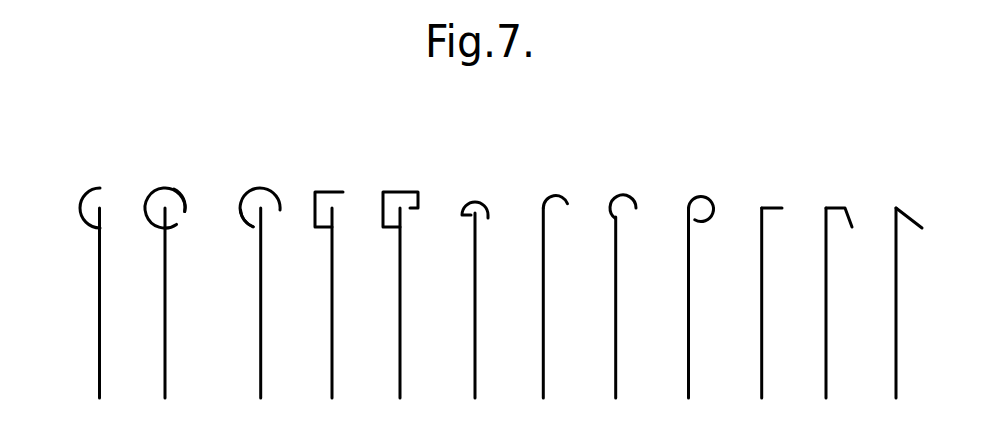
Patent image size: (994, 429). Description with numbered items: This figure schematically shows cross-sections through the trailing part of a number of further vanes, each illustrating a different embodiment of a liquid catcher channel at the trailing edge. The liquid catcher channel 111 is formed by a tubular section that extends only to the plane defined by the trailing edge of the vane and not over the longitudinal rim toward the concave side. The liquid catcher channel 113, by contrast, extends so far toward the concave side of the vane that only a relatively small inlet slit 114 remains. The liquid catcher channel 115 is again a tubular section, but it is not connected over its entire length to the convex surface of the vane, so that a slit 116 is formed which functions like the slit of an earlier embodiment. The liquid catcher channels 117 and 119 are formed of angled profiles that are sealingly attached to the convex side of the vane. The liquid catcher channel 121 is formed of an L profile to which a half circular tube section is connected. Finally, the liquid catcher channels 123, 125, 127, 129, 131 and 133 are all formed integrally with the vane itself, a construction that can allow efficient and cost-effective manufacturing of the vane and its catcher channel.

The liquid catcher channel 111 is at (87, 192).
The liquid catcher channel 113 is at (162, 190).
The inlet slit 114 is at (172, 215).
The liquid catcher channel 115 is at (258, 190).
The slit 116 is at (253, 228).
The liquid catcher channel 117 is at (327, 192).
The liquid catcher channel 119 is at (395, 192).
The liquid catcher channel 121 is at (472, 197).
The liquid catcher channel 123 is at (552, 195).
The liquid catcher channel 125 is at (620, 197).
The liquid catcher channel 127 is at (697, 198).
The liquid catcher channel 129 is at (770, 208).
The liquid catcher channel 131 is at (837, 208).
The liquid catcher channel 133 is at (900, 210).